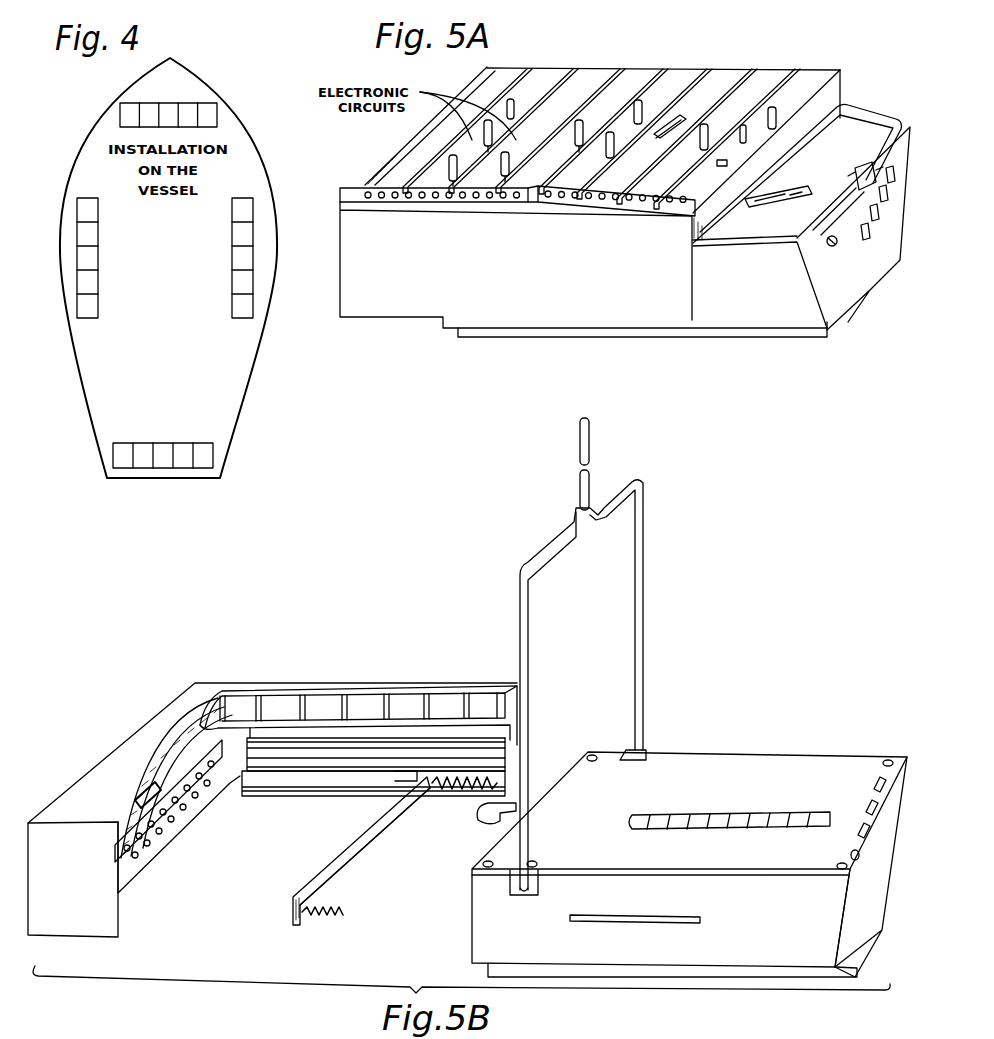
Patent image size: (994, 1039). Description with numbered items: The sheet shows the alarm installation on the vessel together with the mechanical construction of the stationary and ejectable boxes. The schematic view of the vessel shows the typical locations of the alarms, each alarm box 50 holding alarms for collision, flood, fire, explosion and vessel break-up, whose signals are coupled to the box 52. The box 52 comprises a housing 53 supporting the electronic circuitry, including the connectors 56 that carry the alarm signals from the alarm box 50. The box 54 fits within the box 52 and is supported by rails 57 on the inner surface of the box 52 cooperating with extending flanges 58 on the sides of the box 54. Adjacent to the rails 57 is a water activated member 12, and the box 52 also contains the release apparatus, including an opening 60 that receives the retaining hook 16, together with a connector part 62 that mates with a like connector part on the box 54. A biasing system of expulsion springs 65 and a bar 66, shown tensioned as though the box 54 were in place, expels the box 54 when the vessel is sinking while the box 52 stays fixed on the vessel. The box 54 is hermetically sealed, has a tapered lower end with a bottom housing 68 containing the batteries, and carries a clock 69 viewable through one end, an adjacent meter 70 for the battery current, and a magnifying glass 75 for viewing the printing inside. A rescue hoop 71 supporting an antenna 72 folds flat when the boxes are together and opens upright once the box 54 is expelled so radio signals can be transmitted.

In FIG. 5B, the water activated member 12 is at (380, 767).
In FIG. 5B, the retaining hook 16 is at (497, 828).
In FIG. 4, the alarm box 50 is at (153, 468).
In FIG. 5A, the box 52 is at (694, 61).
In FIG. 5B, the box 52 is at (438, 692).
In FIG. 5A, the housing 53 is at (420, 290).
In FIG. 5A, the box 54 is at (859, 317).
In FIG. 5B, the box 54 is at (463, 890).
In FIG. 5A, the connectors 56 is at (573, 200).
In FIG. 5B, the rails 57 is at (335, 750).
In FIG. 5B, the extending flanges 58 is at (700, 920).
In FIG. 5B, the opening 60 is at (163, 813).
In FIG. 5B, the connector part 62 is at (205, 787).
In FIG. 5B, the expulsion springs 65 is at (460, 789).
In FIG. 5B, the bar 66 is at (367, 847).
In FIG. 5A, the bottom housing 68 is at (647, 337).
In FIG. 5B, the bottom housing 68 is at (860, 972).
In FIG. 5A, the clock 69 is at (889, 188).
In FIG. 5B, the clock 69 is at (886, 830).
In FIG. 5A, the meter 70 is at (838, 246).
In FIG. 5B, the meter 70 is at (860, 862).
In FIG. 5A, the rescue hoop 71 is at (883, 117).
In FIG. 5B, the rescue hoop 71 is at (640, 585).
In FIG. 5A, the antenna 72 is at (866, 166).
In FIG. 5B, the antenna 72 is at (590, 453).
In FIG. 5B, the magnifying glass 75 is at (750, 812).